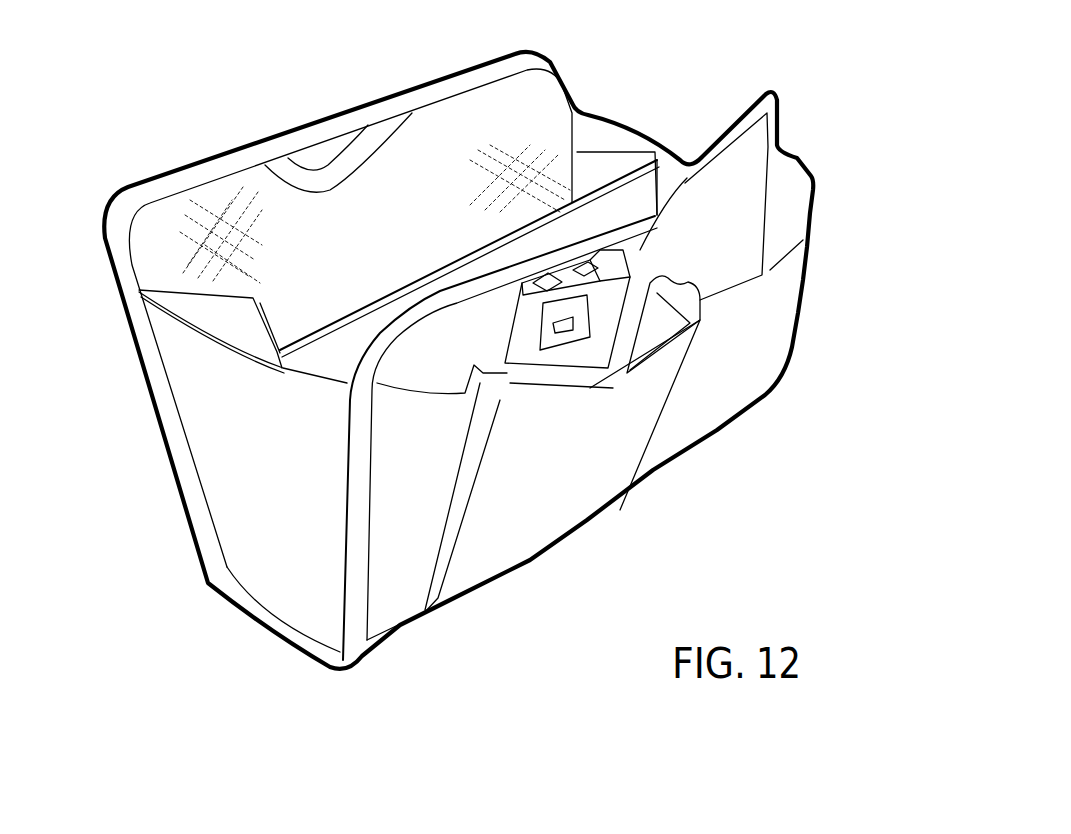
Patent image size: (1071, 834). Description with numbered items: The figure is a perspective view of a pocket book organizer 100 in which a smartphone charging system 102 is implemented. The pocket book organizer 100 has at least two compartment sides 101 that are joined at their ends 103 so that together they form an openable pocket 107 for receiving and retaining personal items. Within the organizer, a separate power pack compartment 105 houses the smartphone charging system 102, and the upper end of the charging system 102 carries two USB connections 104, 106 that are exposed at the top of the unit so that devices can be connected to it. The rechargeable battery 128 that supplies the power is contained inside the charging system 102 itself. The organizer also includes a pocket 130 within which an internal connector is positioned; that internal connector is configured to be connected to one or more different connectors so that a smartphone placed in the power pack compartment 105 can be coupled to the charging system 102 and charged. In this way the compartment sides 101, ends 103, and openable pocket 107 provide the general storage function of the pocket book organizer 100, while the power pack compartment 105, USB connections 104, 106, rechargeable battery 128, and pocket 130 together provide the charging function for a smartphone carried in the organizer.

The pocket book organizer 100 is at (148, 136).
The compartment sides 101 is at (410, 317).
The smartphone charging system 102 is at (602, 322).
The ends 103 is at (277, 504).
The USB connection 104 is at (550, 283).
The power pack compartment 105 is at (637, 250).
The USB connection 106 is at (582, 275).
The openable pocket 107 is at (504, 257).
The rechargeable battery 128 is at (570, 324).
The pocket 130 is at (600, 473).